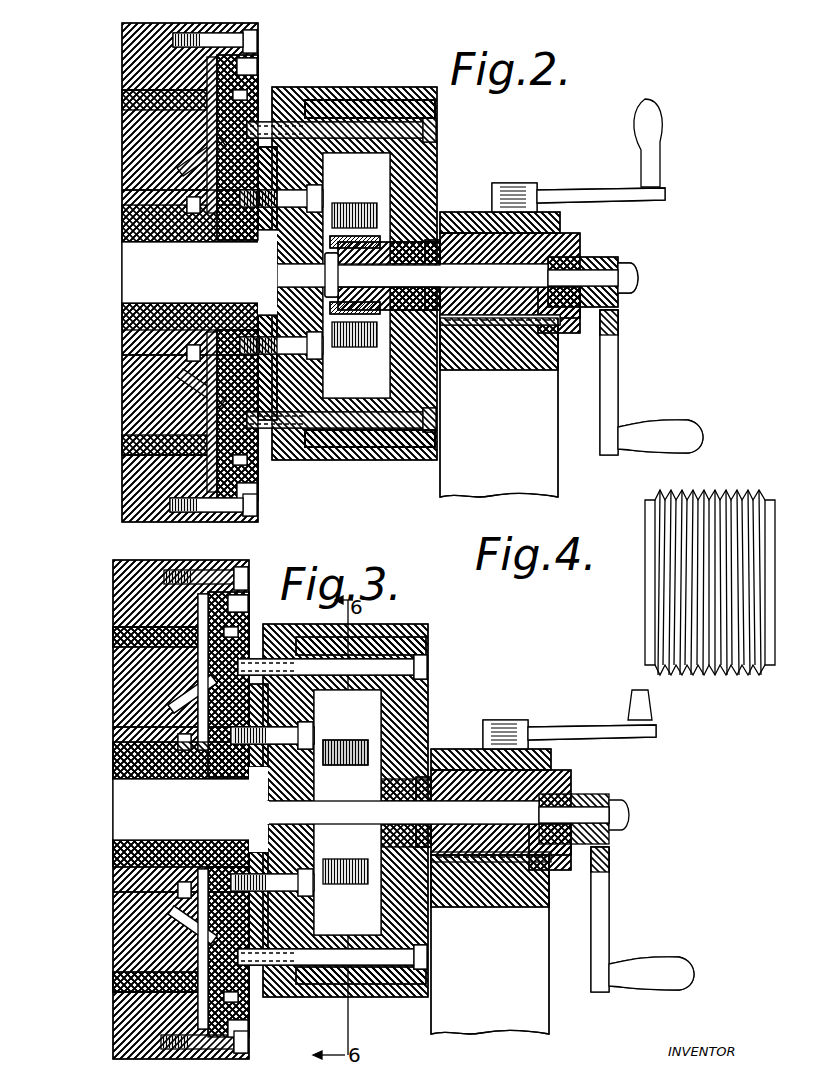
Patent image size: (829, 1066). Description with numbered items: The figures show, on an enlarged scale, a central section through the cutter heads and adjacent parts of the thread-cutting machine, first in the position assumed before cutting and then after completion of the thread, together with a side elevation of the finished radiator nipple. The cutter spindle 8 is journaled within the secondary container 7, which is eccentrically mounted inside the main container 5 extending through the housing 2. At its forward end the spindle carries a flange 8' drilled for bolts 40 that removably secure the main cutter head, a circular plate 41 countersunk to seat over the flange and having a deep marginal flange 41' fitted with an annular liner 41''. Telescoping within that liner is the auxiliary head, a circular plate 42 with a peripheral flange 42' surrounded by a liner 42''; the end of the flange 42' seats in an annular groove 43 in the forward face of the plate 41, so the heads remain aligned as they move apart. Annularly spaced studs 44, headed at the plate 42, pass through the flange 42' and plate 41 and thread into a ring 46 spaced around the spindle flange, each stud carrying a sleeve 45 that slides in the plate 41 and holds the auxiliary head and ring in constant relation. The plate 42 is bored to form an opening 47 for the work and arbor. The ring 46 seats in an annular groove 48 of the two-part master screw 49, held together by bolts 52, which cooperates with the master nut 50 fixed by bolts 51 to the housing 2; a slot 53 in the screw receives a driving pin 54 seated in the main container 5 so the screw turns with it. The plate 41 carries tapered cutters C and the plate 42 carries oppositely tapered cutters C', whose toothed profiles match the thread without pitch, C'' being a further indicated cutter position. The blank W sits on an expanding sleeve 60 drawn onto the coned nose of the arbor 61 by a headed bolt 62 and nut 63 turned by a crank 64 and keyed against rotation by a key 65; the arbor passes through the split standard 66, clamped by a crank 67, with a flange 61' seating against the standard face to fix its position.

In FIG. 2, the housing 2 is at (147, 23).
In FIG. 3, the housing 2 is at (137, 562).
In FIG. 3, the main container 5 is at (122, 679).
In FIG. 3, the secondary container 7 is at (120, 755).
In FIG. 2, the cutter spindle 8 is at (178, 269).
In FIG. 3, the cutter spindle 8 is at (172, 813).
In FIG. 2, the flange 8' is at (341, 245).
In FIG. 3, the flange 8' is at (327, 812).
In FIG. 2, the bolts 40 is at (318, 197).
In FIG. 2, the circular plate 41 is at (308, 360).
In FIG. 2, the marginal flange 41' is at (370, 294).
In FIG. 2, the annular liner 41'' is at (370, 293).
In FIG. 2, the circular plate 42 is at (369, 273).
In FIG. 2, the peripheral flange 42' is at (382, 235).
In FIG. 2, the liner 42'' is at (391, 273).
In FIG. 2, the annular groove 43 is at (296, 465).
In FIG. 2, the studs 44 is at (362, 114).
In FIG. 3, the studs 44 is at (367, 663).
In FIG. 2, the sleeve 45 is at (260, 440).
In FIG. 3, the sleeve 45 is at (300, 629).
In FIG. 3, the ring 46 is at (287, 626).
In FIG. 2, the opening 47 is at (428, 228).
In FIG. 3, the opening 47 is at (428, 740).
In FIG. 3, the annular groove 48 is at (260, 640).
In FIG. 3, the master screw 49 is at (257, 600).
In FIG. 2, the master nut 50 is at (240, 514).
In FIG. 2, the bolts 51 is at (213, 512).
In FIG. 3, the bolts 52 is at (187, 607).
In FIG. 3, the slot 53 is at (186, 691).
In FIG. 3, the driving pin 54 is at (197, 705).
In FIG. 2, the expanding sleeve 60 is at (296, 290).
In FIG. 2, the arbor 61 is at (526, 277).
In FIG. 3, the arbor 61 is at (520, 811).
In FIG. 2, the flange 61' is at (527, 220).
In FIG. 3, the flange 61' is at (523, 754).
In FIG. 2, the headed bolt 62 is at (447, 275).
In FIG. 3, the headed bolt 62 is at (438, 812).
In FIG. 2, the nut 63 is at (612, 261).
In FIG. 2, the crank 64 is at (618, 356).
In FIG. 3, the crank 64 is at (612, 906).
In FIG. 2, the key 65 is at (565, 323).
In FIG. 2, the standard 66 is at (499, 407).
In FIG. 3, the standard 66 is at (490, 944).
In FIG. 2, the crank 67 is at (592, 195).
In FIG. 3, the crank 67 is at (590, 728).
In FIG. 2, the blank W is at (272, 250).
In FIG. 3, the cutters C is at (299, 740).
In FIG. 3, the cutters C' is at (301, 886).
In FIG. 3, the thread C'' is at (301, 739).